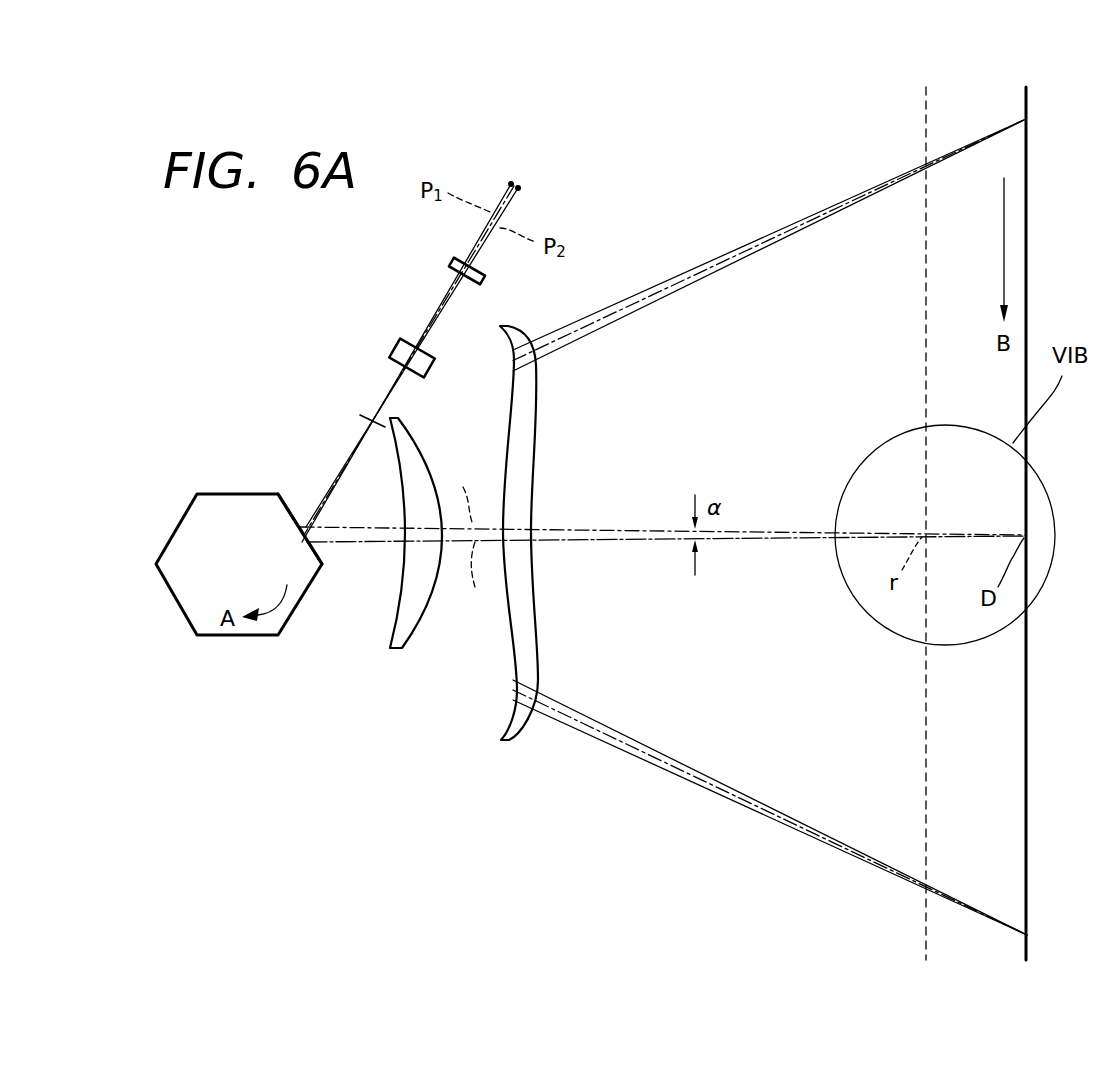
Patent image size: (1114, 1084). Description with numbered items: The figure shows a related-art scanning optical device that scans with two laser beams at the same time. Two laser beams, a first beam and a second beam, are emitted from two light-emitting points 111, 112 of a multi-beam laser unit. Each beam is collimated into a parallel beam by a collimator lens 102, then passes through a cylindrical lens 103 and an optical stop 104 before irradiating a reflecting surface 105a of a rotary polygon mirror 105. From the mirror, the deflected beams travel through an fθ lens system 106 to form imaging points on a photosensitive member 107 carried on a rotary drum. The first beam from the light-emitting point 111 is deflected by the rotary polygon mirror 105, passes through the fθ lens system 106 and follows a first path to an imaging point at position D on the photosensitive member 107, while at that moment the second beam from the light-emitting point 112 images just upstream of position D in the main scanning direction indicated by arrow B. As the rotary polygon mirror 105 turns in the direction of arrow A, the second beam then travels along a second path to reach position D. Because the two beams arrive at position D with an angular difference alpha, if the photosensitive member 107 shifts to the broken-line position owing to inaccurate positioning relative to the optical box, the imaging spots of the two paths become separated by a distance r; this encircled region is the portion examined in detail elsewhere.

The collimator lens 102 is at (452, 263).
The cylindrical lens 103 is at (403, 342).
The optical stop 104 is at (360, 415).
The rotary polygon mirror 105 is at (207, 490).
The reflecting surface 105a is at (291, 506).
The fθ lens system 106 is at (513, 745).
The photosensitive member 107 is at (1026, 104).
The light-emitting point 111 is at (511, 184).
The light-emitting point 112 is at (518, 188).